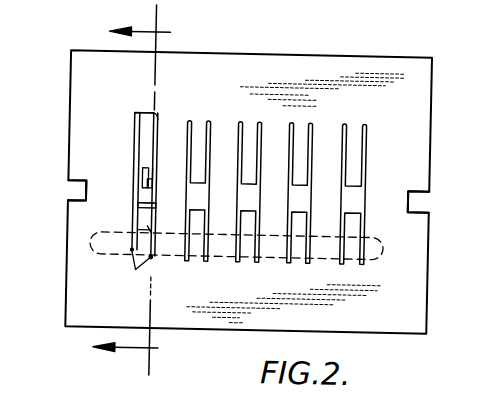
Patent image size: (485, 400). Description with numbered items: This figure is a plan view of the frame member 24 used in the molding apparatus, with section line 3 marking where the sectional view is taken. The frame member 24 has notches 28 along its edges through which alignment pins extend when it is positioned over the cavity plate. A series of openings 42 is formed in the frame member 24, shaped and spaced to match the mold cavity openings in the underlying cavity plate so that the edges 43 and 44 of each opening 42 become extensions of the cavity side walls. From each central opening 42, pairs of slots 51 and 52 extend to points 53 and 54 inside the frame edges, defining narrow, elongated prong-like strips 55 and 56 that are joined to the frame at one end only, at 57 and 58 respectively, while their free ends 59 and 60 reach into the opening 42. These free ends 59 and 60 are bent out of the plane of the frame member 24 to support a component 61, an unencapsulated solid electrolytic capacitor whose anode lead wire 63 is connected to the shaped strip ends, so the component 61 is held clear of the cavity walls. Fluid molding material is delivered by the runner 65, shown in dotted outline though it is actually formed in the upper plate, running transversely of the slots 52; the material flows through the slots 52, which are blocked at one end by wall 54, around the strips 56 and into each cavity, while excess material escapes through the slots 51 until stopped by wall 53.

The section line 3- 3 is at (131, 189).
The frame member 24 is at (70, 117).
The notches 28 is at (80, 192).
The openings 42 is at (348, 192).
The edge 43 is at (147, 204).
The edge 44 is at (152, 185).
The slots 51 is at (137, 162).
The slots 52 is at (133, 252).
The point (wall) 53 is at (140, 115).
The point (wall) 54 is at (137, 272).
The prong-like strip 55 is at (145, 145).
The prong-like strip 56 is at (148, 228).
The joined end 57 is at (140, 128).
The joined end 58 is at (152, 259).
The free end 59 is at (156, 180).
The free end 60 is at (149, 209).
The component 61 is at (143, 196).
The anode lead wire 63 is at (149, 234).
The runner (groove) 65 is at (383, 245).